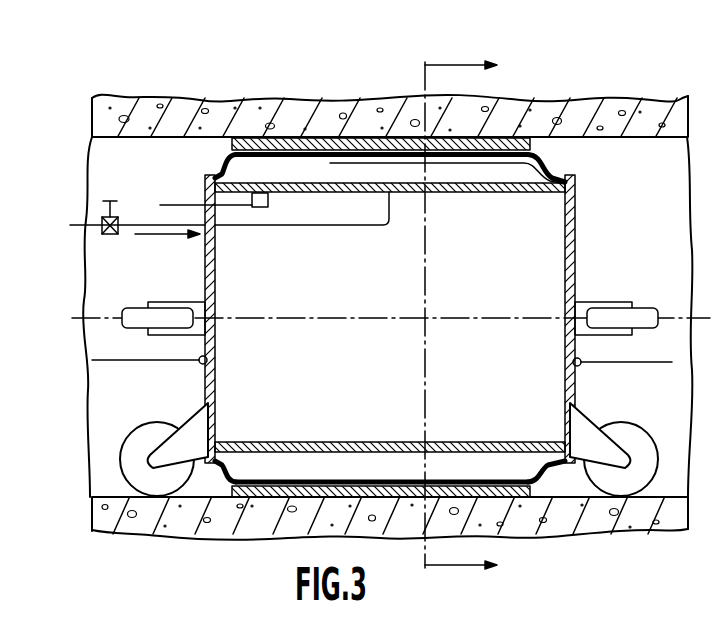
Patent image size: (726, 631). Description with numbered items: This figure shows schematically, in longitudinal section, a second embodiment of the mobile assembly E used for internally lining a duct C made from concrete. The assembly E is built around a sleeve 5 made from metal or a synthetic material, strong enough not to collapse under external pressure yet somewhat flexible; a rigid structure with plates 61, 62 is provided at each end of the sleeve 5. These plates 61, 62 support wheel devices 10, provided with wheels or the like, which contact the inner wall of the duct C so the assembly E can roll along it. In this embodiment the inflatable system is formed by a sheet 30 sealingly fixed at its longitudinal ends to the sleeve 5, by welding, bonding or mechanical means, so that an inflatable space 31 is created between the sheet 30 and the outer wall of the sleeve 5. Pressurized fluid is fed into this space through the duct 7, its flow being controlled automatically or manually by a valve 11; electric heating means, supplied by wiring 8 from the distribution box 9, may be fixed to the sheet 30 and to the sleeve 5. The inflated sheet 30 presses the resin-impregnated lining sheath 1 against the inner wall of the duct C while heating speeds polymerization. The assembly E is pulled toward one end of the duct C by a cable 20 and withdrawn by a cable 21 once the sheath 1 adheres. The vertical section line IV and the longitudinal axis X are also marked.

The duct C is at (205, 122).
The lining sheath 1 is at (288, 146).
The sheet 30 is at (547, 167).
The inflatable space 31 is at (492, 168).
The sleeve 5 is at (467, 195).
The mobile assembly E is at (435, 319).
The end plate 61 is at (218, 255).
The end plate 62 is at (565, 246).
The duct for pressurized fluid 7 is at (147, 222).
The wiring 8 is at (192, 203).
The distribution box 9 is at (268, 203).
The valve 11 is at (118, 214).
The wheel device 10 is at (183, 296).
The cable 21 is at (127, 360).
The cable 20 is at (642, 362).
The section line IV- IV is at (479, 317).
The axis X- X is at (388, 319).